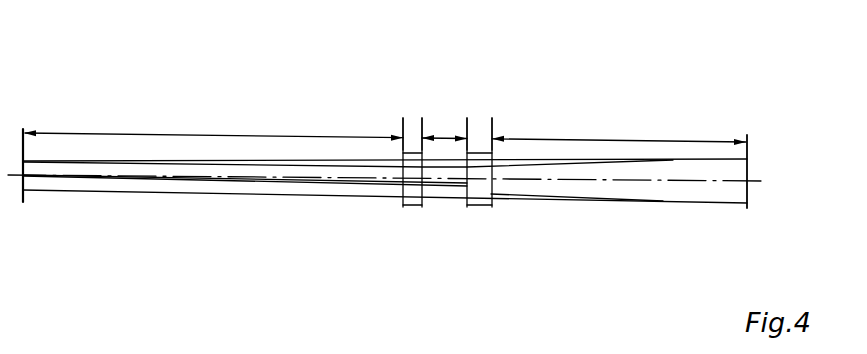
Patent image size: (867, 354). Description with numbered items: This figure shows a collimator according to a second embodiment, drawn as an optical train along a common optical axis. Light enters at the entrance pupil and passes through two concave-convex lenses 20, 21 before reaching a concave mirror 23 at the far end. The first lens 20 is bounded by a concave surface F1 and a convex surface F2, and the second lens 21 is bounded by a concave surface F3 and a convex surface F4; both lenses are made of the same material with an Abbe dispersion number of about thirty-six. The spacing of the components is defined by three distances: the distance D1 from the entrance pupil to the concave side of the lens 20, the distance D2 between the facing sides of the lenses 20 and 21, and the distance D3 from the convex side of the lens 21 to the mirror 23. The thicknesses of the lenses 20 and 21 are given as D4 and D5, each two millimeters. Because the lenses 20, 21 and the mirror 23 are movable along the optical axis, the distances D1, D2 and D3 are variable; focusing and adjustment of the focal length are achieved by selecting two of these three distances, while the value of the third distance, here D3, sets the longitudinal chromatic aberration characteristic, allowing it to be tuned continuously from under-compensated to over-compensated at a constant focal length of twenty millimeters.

The concave-convex lens 20 is at (410, 208).
The concave-convex lens 21 is at (478, 208).
The concave mirror 23 is at (747, 206).
The distance from entrance pupil to concave side of lens 20 D1 is at (213, 119).
The distance between facing sides of lenses 20 and 21 D2 is at (444, 136).
The distance from convex side of lens 21 to mirror 23 D3 is at (619, 124).
The thickness of lens 20 D4 is at (413, 137).
The thickness of lens 21 D5 is at (479, 136).
The concave surface F1 is at (403, 184).
The convex surface F2 is at (421, 184).
The concave surface F3 is at (466, 184).
The convex surface F4 is at (493, 184).